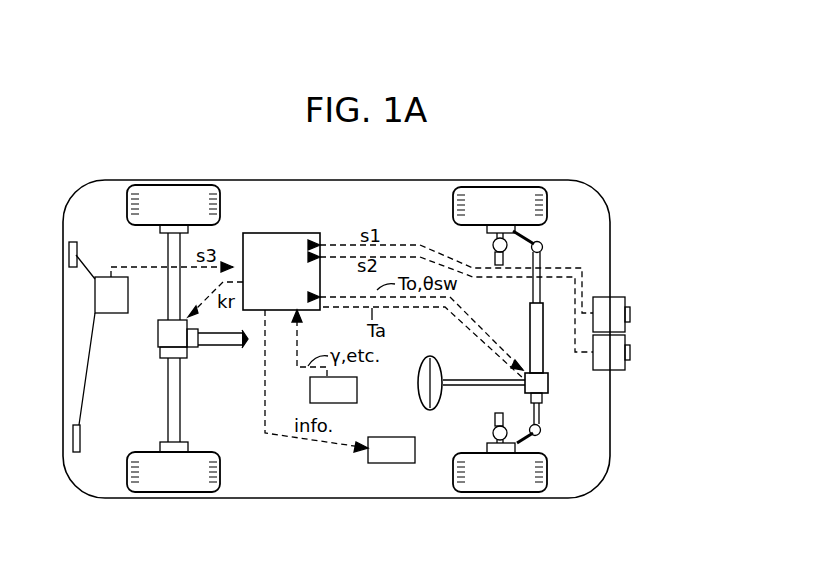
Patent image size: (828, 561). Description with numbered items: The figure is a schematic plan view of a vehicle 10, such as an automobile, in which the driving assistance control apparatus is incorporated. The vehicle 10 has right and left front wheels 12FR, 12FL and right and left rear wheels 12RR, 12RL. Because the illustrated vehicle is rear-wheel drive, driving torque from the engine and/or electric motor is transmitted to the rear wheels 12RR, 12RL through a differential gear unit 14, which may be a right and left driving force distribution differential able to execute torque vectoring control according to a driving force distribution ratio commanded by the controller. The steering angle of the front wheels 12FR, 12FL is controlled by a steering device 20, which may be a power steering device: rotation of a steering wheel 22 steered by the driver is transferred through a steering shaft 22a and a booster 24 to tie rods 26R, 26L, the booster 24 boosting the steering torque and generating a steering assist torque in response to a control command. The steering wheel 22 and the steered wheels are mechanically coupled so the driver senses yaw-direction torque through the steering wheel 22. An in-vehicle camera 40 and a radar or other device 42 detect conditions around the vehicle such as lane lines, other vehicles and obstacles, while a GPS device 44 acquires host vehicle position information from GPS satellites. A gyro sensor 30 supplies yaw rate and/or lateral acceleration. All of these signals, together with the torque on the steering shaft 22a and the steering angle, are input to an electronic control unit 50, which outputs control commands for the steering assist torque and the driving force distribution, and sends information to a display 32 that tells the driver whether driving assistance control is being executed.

The vehicle 10 is at (617, 231).
The left rear wheel 12RL is at (173, 209).
The right rear wheel 12RR is at (173, 467).
The left front wheel 12FL is at (500, 226).
The right front wheel 12FR is at (500, 452).
The differential gear unit 14 is at (203, 337).
The steering device 20 is at (545, 364).
The steering wheel 22 is at (418, 383).
The steering shaft 22a is at (464, 380).
The booster 24 is at (549, 386).
The left tie rod 26L is at (525, 237).
The right tie rod 26R is at (524, 431).
The gyro sensor 30 is at (333, 390).
The display 32 is at (391, 450).
The in-vehicle camera 40 is at (601, 325).
The radar or other device 42 is at (601, 363).
The GPS device 44 is at (119, 306).
The electronic control unit 50 is at (268, 283).